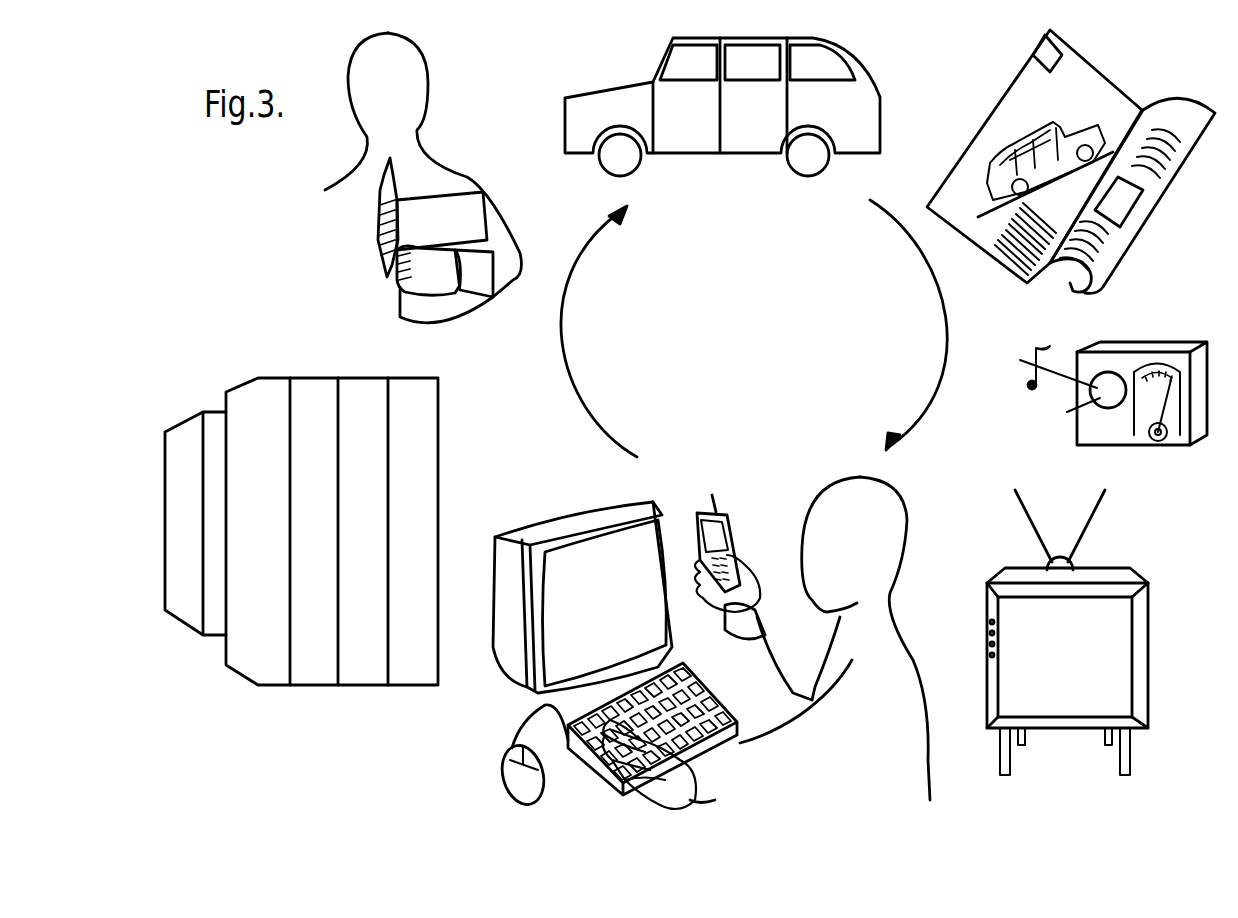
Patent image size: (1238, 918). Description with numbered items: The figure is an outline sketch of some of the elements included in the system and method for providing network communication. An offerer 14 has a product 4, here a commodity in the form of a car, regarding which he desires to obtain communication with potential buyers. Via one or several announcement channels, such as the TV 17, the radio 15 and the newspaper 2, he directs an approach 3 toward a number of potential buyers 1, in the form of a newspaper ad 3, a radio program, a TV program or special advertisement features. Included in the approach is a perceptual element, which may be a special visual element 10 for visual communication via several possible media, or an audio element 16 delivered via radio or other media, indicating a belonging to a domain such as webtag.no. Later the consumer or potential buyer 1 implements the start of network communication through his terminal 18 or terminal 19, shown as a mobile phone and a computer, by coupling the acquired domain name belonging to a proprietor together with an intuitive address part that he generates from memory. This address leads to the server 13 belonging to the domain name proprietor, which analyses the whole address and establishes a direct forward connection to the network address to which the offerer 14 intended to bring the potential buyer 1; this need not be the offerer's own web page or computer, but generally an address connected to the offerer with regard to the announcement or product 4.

The potential buyer 1 is at (870, 732).
The newspaper 2 is at (1105, 85).
The approach 3 is at (1000, 100).
The product 4 is at (705, 152).
The visual element 10 is at (1040, 40).
The server 13 is at (420, 473).
The offerer 14 is at (420, 60).
The radio 15 is at (1175, 350).
The audio element 16 is at (1032, 380).
The TV 17 is at (1140, 578).
The terminal 18 is at (725, 520).
The terminal 19 is at (585, 505).